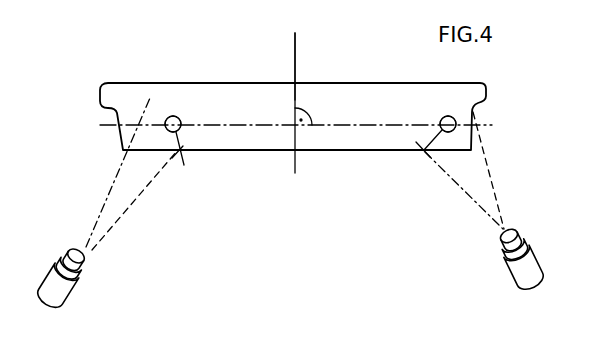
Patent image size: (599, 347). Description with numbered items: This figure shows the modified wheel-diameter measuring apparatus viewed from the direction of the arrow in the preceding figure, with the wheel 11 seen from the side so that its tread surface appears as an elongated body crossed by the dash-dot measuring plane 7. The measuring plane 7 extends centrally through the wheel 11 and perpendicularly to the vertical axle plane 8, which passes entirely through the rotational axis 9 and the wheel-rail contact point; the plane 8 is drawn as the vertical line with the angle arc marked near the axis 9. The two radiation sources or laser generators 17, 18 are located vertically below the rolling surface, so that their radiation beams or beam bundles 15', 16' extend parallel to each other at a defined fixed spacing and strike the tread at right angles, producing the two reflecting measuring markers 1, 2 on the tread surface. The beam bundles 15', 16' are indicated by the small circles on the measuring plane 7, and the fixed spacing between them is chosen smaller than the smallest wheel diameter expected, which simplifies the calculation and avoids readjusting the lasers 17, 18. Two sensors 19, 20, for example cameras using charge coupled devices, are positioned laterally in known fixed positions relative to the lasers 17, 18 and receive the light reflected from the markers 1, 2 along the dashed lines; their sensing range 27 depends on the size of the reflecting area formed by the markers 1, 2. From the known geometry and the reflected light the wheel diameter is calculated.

The measuring marker 1 is at (142, 191).
The measuring marker 2 is at (459, 179).
The measuring plane 7 is at (336, 123).
The vertical axle plane 8 is at (295, 167).
The rotational axis 9 is at (295, 48).
The wheel 11 is at (231, 92).
The radiation beam 15' is at (183, 91).
The laser generator 17 is at (173, 124).
The radiation beam 16' is at (496, 111).
The laser generator 18 is at (448, 124).
The sensor 19 is at (70, 292).
The sensor 20 is at (517, 277).
The sensing range 27 is at (499, 166).